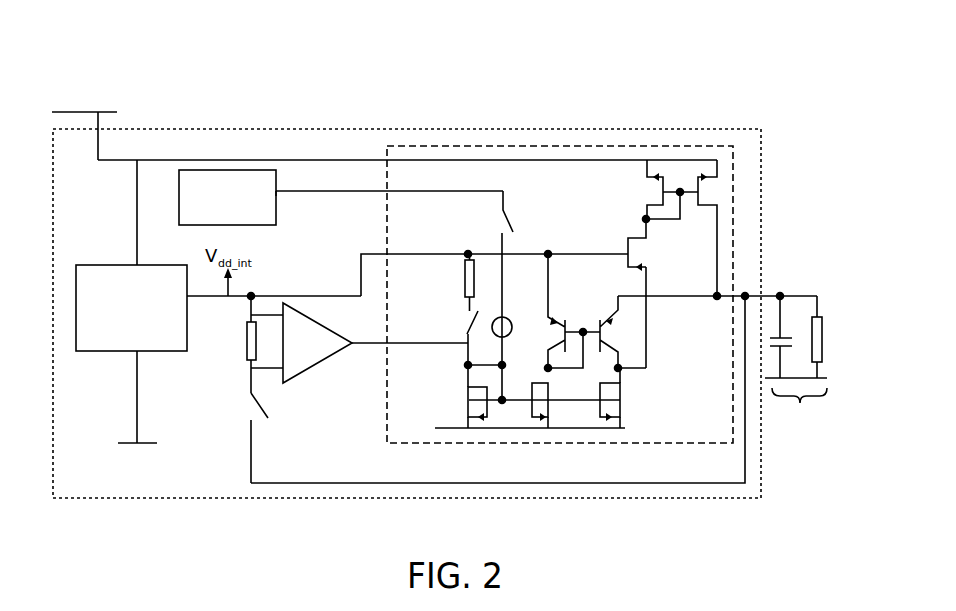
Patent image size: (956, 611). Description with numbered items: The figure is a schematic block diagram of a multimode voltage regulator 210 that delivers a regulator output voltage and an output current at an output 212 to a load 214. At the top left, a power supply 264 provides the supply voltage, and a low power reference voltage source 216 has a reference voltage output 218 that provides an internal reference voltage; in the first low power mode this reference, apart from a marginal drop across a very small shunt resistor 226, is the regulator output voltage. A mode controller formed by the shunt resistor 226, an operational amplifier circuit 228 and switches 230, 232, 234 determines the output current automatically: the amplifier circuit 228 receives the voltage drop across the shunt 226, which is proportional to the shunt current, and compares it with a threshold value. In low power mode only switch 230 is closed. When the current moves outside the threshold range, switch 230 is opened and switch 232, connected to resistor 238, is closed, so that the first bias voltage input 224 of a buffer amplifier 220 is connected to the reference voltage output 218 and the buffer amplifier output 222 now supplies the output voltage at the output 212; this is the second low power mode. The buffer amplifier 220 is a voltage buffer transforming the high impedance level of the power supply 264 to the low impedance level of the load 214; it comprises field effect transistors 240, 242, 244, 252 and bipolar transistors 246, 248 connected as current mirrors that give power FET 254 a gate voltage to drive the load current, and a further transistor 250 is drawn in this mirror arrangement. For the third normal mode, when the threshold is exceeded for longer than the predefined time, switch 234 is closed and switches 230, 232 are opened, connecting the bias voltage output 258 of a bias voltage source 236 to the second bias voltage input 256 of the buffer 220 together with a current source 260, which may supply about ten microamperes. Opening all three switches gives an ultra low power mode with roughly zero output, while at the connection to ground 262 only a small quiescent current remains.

The multimode voltage regulator 210 is at (344, 129).
The output 212 is at (765, 294).
The load 214 is at (796, 367).
The low power reference voltage source 216 is at (133, 273).
The reference voltage output 218 is at (190, 300).
The buffer amplifier 220 is at (505, 146).
The buffer amplifier output 222 is at (735, 304).
The first bias voltage input 224 is at (387, 254).
The shunt resistor 226 is at (245, 337).
The operational amplifier circuit 228 is at (313, 338).
The switch 230 is at (246, 408).
The switch 232 is at (462, 313).
The switch 234 is at (513, 230).
The bias voltage source 236 is at (217, 170).
The resistor 238 is at (465, 290).
The field effect transistor 240 is at (462, 392).
The field effect transistor 242 is at (532, 390).
The field effect transistor 244 is at (622, 404).
The bipolar transistor 246 is at (568, 327).
The bipolar transistor 248 is at (616, 328).
The transistor 250 is at (628, 243).
The field effect transistor 252 is at (655, 190).
The power FET 254 is at (716, 190).
The second bias voltage input 256 is at (387, 191).
The bias voltage output 258 is at (277, 195).
The current source 260 is at (522, 328).
The ground 262 is at (131, 441).
The power supply 264 is at (107, 112).